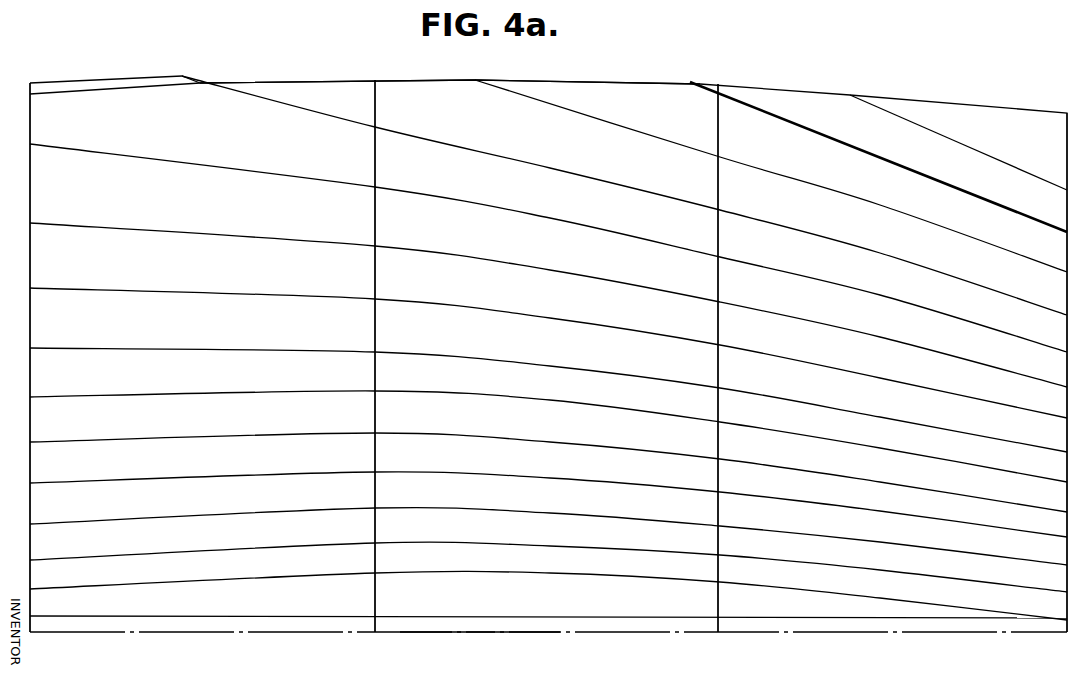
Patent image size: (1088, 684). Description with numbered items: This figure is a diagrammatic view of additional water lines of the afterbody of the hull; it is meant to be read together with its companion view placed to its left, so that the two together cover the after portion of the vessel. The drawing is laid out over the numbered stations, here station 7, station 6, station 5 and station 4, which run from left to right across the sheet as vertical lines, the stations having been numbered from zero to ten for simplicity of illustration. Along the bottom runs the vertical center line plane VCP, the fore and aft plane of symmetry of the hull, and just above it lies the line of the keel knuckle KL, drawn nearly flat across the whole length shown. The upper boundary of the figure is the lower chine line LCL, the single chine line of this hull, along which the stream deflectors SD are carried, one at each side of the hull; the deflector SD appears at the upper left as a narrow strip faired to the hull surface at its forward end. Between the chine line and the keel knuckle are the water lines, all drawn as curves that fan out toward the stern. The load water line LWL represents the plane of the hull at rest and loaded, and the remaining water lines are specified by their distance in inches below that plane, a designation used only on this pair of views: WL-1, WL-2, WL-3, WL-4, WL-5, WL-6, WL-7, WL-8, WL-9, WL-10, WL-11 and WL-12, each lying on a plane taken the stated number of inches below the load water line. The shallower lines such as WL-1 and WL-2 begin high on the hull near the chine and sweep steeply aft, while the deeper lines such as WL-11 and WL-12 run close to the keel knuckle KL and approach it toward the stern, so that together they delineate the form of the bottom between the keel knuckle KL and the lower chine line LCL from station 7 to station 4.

The stream deflector SD is at (127, 80).
The lower chine line LCL is at (578, 80).
The load water line plane LWL is at (944, 182).
The water line one inch below load water line WL-1 is at (828, 193).
The water line two inches below load water line WL-2 is at (828, 241).
The water line three inches below load water line WL-3 is at (835, 287).
The water line four inches below load water line WL-4 is at (838, 330).
The water line five inches below load water line WL-5 is at (837, 372).
The water line six inches below load water line WL-6 is at (837, 410).
The water line seven inches below load water line WL-7 is at (832, 447).
The water line eight inches below load water line WL-8 is at (830, 480).
The water line nine inches below load water line WL-9 is at (830, 510).
The water line ten inches below load water line WL-10 is at (828, 542).
The water line eleven inches below load water line WL-11 is at (830, 570).
The water line twelve inches below load water line WL-12 is at (833, 597).
The keel knuckle line KL is at (306, 614).
The vertical center line plane VCP is at (482, 636).
The station 7 is at (33, 372).
The station 6 is at (374, 370).
The station 5 is at (721, 372).
The station 4 is at (1062, 388).